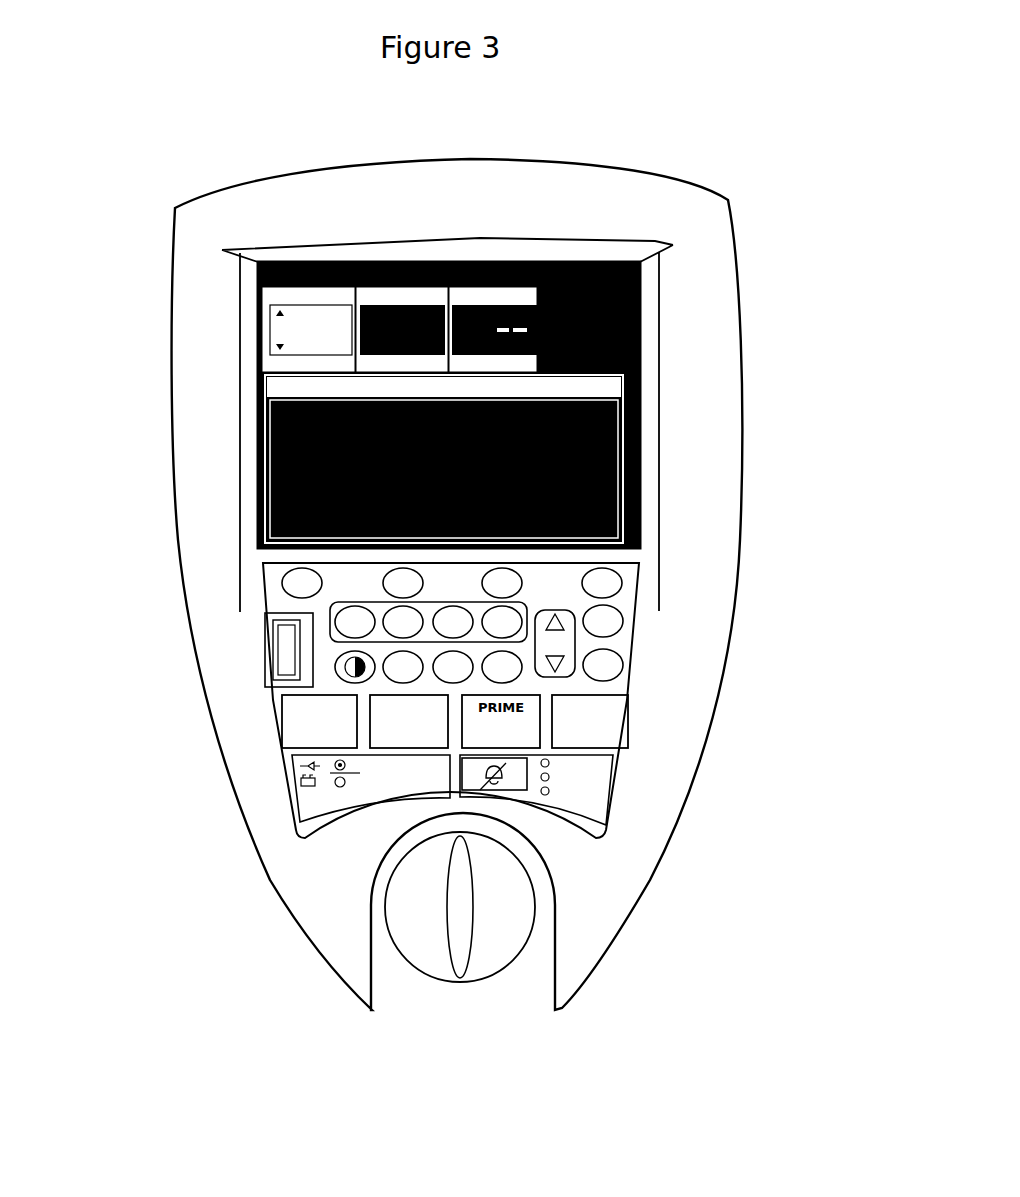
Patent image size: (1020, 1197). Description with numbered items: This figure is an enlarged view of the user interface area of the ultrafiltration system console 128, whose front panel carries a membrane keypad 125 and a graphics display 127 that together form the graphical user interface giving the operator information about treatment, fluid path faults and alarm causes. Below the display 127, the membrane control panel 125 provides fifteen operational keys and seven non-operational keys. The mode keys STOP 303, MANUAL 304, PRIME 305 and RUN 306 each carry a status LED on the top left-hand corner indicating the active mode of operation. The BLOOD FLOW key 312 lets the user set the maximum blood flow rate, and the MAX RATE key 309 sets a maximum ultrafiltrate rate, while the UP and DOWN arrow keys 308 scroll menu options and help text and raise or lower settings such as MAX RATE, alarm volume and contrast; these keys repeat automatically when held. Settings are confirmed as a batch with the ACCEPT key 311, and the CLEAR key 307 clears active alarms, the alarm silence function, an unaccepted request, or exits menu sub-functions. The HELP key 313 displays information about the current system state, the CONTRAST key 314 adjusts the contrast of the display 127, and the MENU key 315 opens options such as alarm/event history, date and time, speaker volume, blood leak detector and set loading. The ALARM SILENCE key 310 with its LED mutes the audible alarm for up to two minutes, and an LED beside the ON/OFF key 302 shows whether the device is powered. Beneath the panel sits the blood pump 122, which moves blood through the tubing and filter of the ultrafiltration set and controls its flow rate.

The console 128 is at (485, 564).
The graphics display 127 is at (551, 396).
The membrane keypad 125 is at (576, 426).
The ON/OFF key 302 is at (383, 714).
The BLOOD FLOW key 312 is at (284, 564).
The MAX RATE key 309 is at (665, 587).
The CONTRAST key 314 is at (216, 618).
The HELP key 313 is at (254, 593).
The MANUAL key 304 is at (648, 772).
The UP and DOWN arrow keys 308 is at (698, 696).
The CLEAR key 307 is at (721, 639).
The ACCEPT key 311 is at (728, 693).
The RUN key 306 is at (243, 741).
The PRIME key 305 is at (304, 810).
The STOP key 303 is at (691, 760).
The MENU key 315 is at (646, 805).
The ALARM SILENCE key 310 is at (639, 868).
The blood pump 122 is at (588, 942).